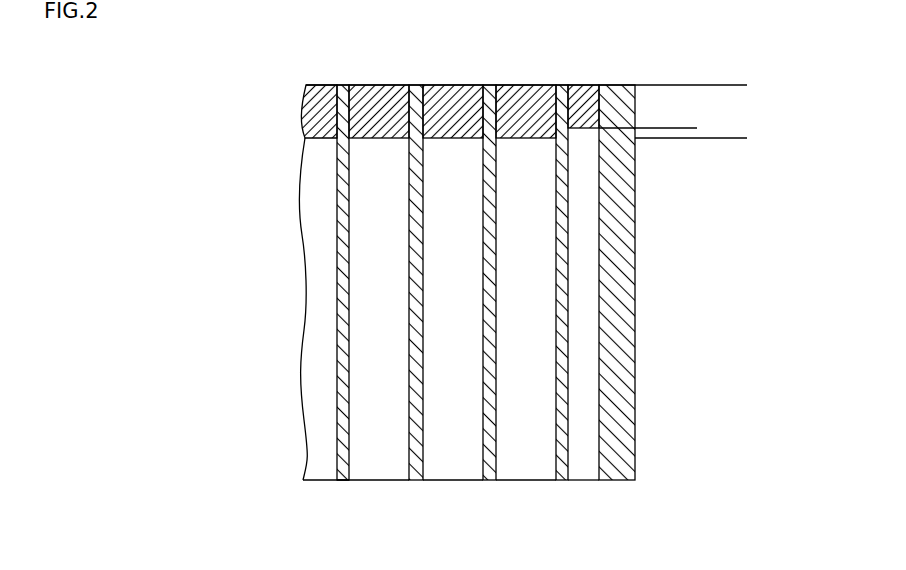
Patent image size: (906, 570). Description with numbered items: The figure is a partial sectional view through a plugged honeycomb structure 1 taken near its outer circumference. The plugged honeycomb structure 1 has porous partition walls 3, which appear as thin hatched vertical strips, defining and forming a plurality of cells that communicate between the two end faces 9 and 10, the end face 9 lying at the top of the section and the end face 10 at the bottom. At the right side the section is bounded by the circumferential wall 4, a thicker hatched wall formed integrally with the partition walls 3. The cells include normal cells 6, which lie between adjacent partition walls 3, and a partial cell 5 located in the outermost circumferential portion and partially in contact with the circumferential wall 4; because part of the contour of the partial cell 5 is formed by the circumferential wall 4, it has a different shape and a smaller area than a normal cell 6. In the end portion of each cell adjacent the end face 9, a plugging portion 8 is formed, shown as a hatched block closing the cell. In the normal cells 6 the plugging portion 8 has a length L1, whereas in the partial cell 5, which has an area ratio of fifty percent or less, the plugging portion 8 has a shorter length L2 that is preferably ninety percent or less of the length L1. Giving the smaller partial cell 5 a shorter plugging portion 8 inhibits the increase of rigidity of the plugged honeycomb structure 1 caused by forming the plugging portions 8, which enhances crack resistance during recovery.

The plugged honeycomb structure 1 is at (645, 383).
The porous partition wall 3 is at (490, 407).
The circumferential wall 4 is at (625, 272).
The partial cell 5 is at (588, 456).
The normal cell 6 is at (527, 455).
The plugging portion 8 is at (515, 93).
The end face 9 is at (344, 85).
The end face 10 is at (345, 480).
The length of the plugging portion in the normal cell L1 is at (721, 87).
The length of the plugging portion in the partial cell L2 is at (672, 87).